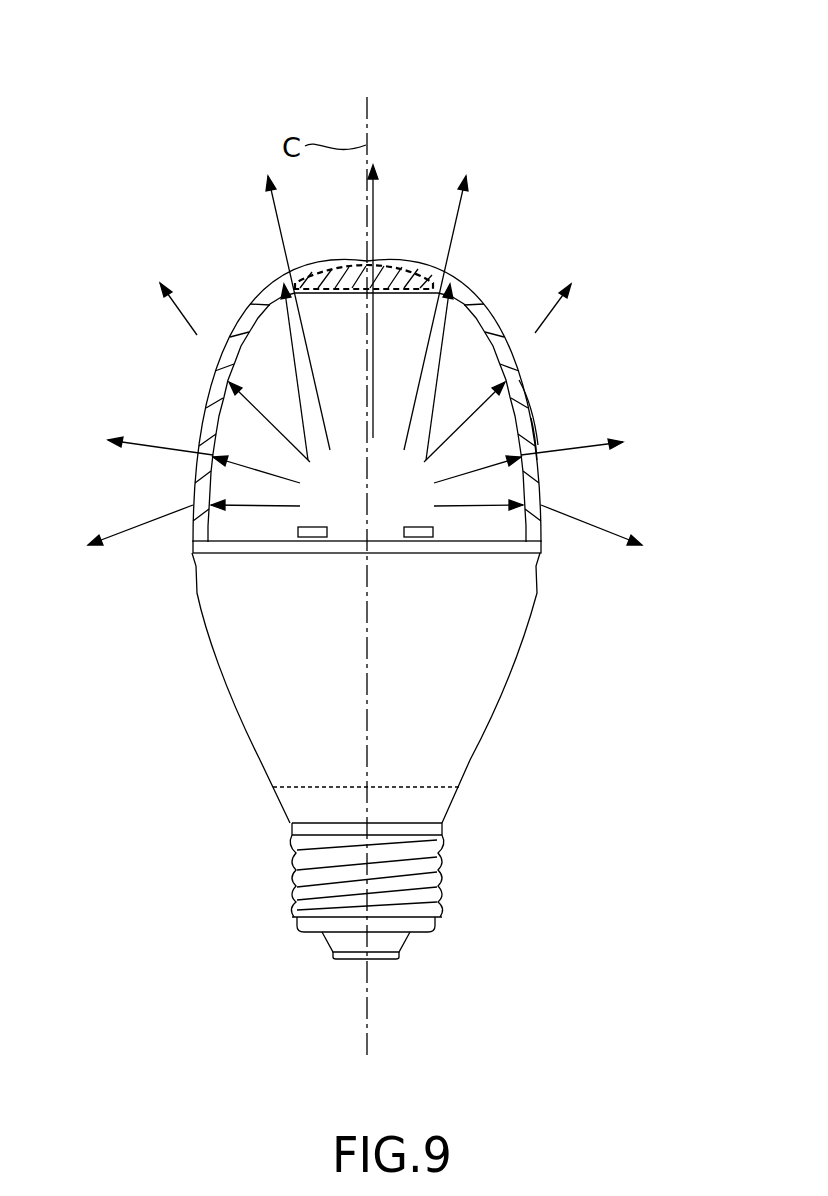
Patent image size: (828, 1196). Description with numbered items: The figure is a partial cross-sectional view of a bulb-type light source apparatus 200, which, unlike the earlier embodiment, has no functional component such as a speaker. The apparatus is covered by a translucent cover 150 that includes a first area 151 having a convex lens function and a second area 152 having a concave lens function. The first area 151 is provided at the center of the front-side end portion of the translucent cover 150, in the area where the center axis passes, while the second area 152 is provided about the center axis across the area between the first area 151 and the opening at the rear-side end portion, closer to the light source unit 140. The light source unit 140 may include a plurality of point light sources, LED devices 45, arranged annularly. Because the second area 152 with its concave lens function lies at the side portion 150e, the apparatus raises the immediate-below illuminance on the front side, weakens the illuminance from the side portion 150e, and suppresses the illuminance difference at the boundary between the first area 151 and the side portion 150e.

The bulb-type light source apparatus 200 is at (420, 102).
The LED device 45 is at (313, 538).
The light source unit 140 is at (293, 533).
The translucent cover 150 is at (240, 303).
The side portion 150e is at (519, 380).
The first area 151 is at (397, 264).
The second area 152 is at (531, 418).